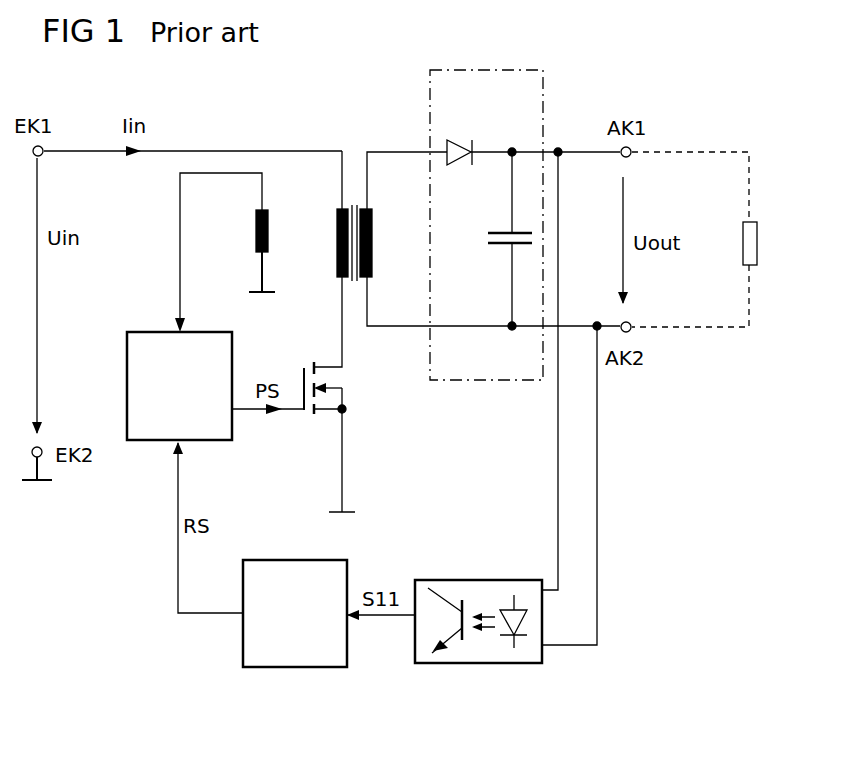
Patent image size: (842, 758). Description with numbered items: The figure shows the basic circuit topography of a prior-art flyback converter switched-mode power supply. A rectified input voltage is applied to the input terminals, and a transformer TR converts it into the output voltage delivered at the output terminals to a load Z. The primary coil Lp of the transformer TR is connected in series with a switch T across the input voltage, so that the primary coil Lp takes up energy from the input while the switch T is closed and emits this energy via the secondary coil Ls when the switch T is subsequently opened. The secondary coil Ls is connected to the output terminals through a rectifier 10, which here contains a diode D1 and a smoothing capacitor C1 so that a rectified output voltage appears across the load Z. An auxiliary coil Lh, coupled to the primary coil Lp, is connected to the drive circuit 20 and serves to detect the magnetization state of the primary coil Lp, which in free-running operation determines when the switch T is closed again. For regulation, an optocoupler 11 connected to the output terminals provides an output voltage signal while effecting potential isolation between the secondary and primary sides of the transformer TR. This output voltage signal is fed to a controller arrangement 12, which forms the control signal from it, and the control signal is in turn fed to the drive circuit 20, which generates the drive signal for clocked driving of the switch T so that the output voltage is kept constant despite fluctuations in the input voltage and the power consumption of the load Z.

The rectifier 10 is at (516, 223).
The optocoupler 11 is at (477, 665).
The controller arrangement 12 is at (292, 668).
The drive circuit 20 is at (150, 443).
The transformer TR is at (452, 216).
The primary coil Lp is at (337, 232).
The secondary coil Ls is at (372, 222).
The auxiliary coil Lh is at (256, 232).
The switch T is at (304, 422).
The diode D1 is at (463, 146).
The capacitor C1 is at (490, 236).
The load Z is at (757, 244).